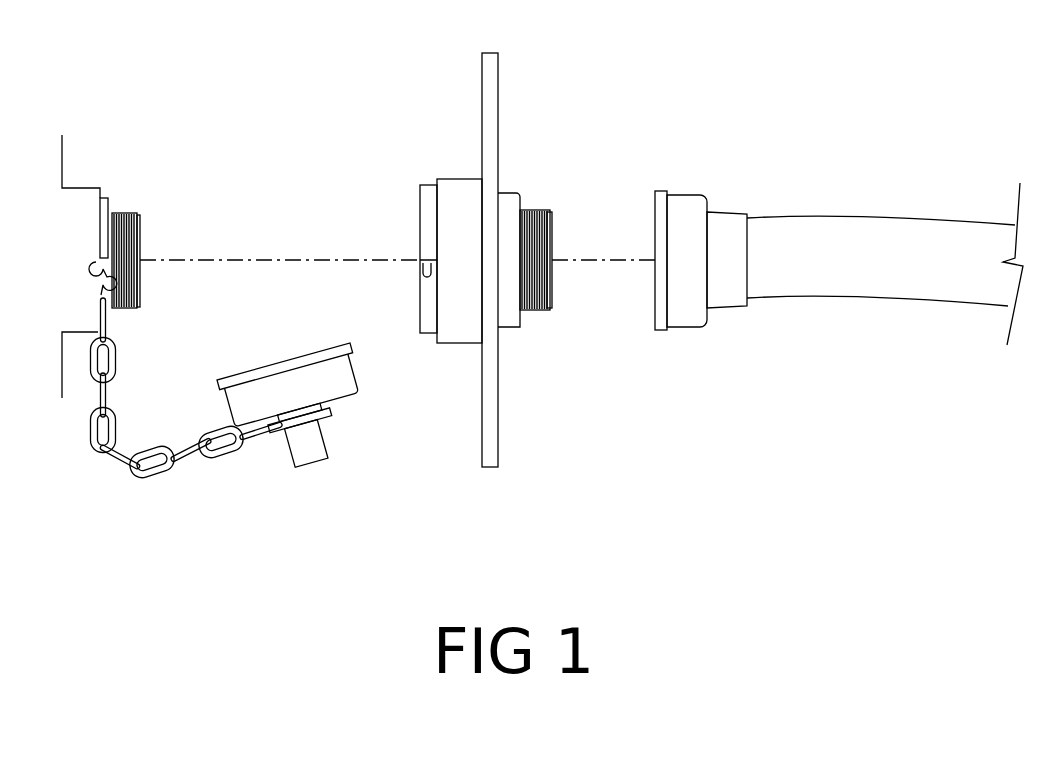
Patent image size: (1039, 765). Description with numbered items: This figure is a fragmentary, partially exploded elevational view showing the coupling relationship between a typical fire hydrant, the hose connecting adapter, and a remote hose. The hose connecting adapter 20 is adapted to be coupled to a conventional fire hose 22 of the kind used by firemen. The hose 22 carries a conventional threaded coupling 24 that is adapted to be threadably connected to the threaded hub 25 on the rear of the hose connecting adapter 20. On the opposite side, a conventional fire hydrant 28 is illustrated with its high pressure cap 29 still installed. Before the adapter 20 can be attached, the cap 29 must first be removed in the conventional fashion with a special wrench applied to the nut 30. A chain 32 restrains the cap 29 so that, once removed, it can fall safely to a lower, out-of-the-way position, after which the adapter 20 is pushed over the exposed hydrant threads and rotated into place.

The hose connecting adapter 20 is at (490, 60).
The fire hose 22 is at (840, 223).
The threaded coupling 24 is at (685, 202).
The threaded hub 25 is at (513, 322).
The fire hydrant 28 is at (82, 197).
The high pressure cap 29 is at (343, 390).
The nut 30 is at (313, 458).
The chain 32 is at (137, 475).